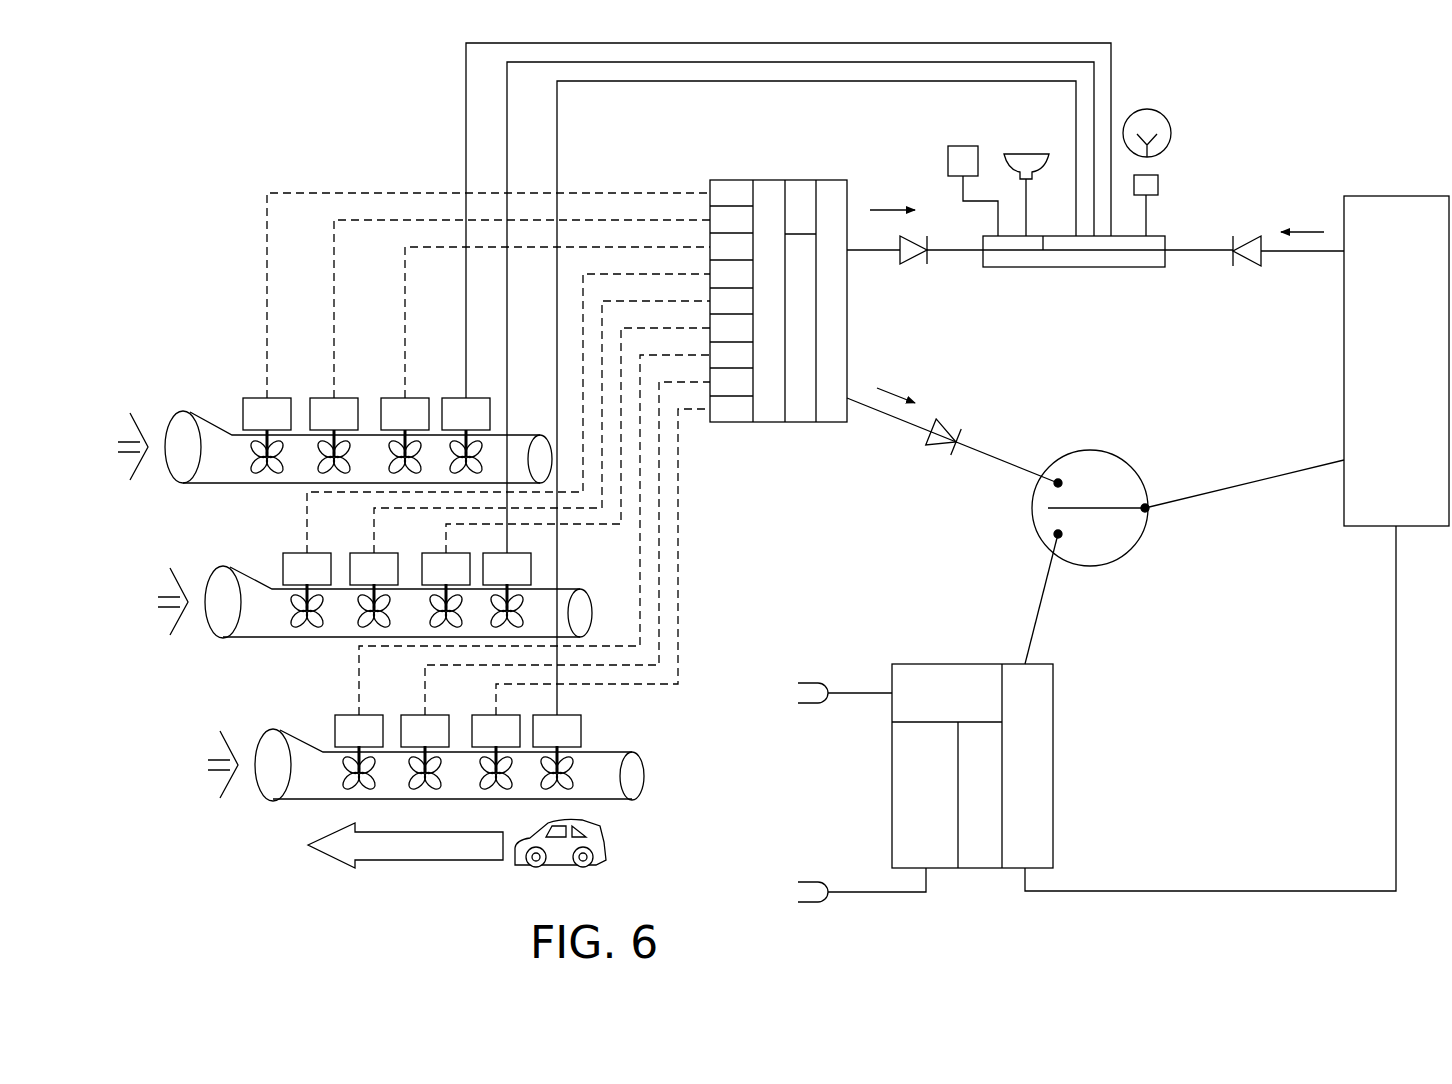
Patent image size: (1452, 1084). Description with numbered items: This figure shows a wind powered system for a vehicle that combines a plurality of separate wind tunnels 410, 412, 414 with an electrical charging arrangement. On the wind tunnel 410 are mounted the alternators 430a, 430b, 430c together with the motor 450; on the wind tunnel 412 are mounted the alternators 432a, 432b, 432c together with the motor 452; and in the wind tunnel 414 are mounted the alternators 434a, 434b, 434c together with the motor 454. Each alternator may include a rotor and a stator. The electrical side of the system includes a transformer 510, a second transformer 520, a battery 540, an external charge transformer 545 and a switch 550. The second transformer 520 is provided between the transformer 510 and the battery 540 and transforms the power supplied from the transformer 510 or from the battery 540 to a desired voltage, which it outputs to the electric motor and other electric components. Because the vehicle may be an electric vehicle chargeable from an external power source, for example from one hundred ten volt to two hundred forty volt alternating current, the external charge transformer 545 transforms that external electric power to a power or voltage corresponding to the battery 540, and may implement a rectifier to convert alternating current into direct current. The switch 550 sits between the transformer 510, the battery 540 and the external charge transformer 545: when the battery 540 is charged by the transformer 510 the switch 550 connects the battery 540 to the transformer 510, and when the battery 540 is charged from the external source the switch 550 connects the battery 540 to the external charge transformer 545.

The wind tunnel 410 is at (190, 412).
The wind tunnel 412 is at (230, 568).
The wind tunnel 414 is at (280, 731).
The alternator 430a is at (267, 437).
The alternator 430b is at (334, 437).
The alternator 430c is at (405, 437).
The alternator 432a is at (307, 591).
The alternator 432b is at (374, 591).
The alternator 432c is at (446, 591).
The alternator 434a is at (359, 753).
The alternator 434b is at (425, 753).
The alternator 434c is at (496, 753).
The motor 450 is at (482, 400).
The motor 452 is at (527, 556).
The motor 454 is at (582, 719).
The transformer 510 is at (784, 178).
The second transformer 520 is at (1090, 268).
The battery 540 is at (1391, 192).
The external charge transformer 545 is at (1064, 764).
The switch 550 is at (1130, 450).